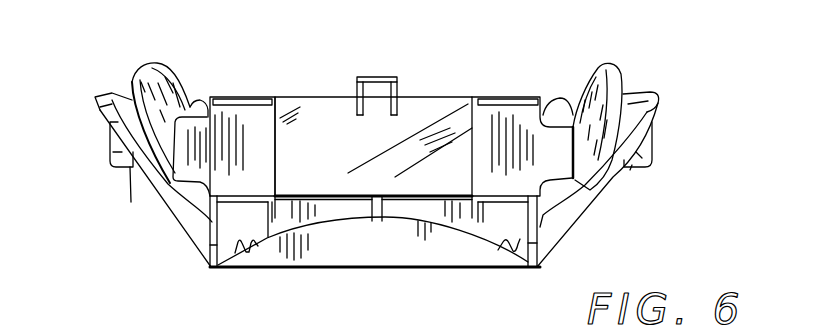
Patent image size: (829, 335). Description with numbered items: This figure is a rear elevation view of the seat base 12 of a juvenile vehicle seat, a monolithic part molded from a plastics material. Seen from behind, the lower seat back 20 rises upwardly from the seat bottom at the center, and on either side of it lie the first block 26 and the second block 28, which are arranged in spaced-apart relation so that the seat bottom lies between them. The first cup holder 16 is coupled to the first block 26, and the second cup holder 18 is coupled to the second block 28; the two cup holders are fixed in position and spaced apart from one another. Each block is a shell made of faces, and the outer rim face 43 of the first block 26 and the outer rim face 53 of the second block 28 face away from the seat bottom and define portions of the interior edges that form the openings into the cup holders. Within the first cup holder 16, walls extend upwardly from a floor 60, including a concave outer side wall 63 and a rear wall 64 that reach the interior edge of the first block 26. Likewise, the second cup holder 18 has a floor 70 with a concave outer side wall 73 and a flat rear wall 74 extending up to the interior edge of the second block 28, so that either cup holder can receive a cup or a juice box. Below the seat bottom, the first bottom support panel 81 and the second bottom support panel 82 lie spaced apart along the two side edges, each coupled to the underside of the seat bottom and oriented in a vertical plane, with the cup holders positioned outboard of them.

The seat base 12 is at (134, 52).
The first cup holder 16 is at (109, 172).
The second cup holder 18 is at (644, 173).
The lower seat back 20 is at (432, 120).
The first block 26 is at (96, 96).
The second block 28 is at (661, 90).
The outer rim face 43 is at (100, 107).
The outer rim face 53 is at (650, 109).
The floor 60 is at (142, 196).
The outer side wall 63 is at (110, 130).
The rear wall 64 is at (110, 157).
The floor 70 is at (632, 167).
The outer side wall 73 is at (653, 146).
The rear wall 74 is at (638, 155).
The first bottom support panel 81 is at (205, 227).
The second bottom support panel 82 is at (543, 228).